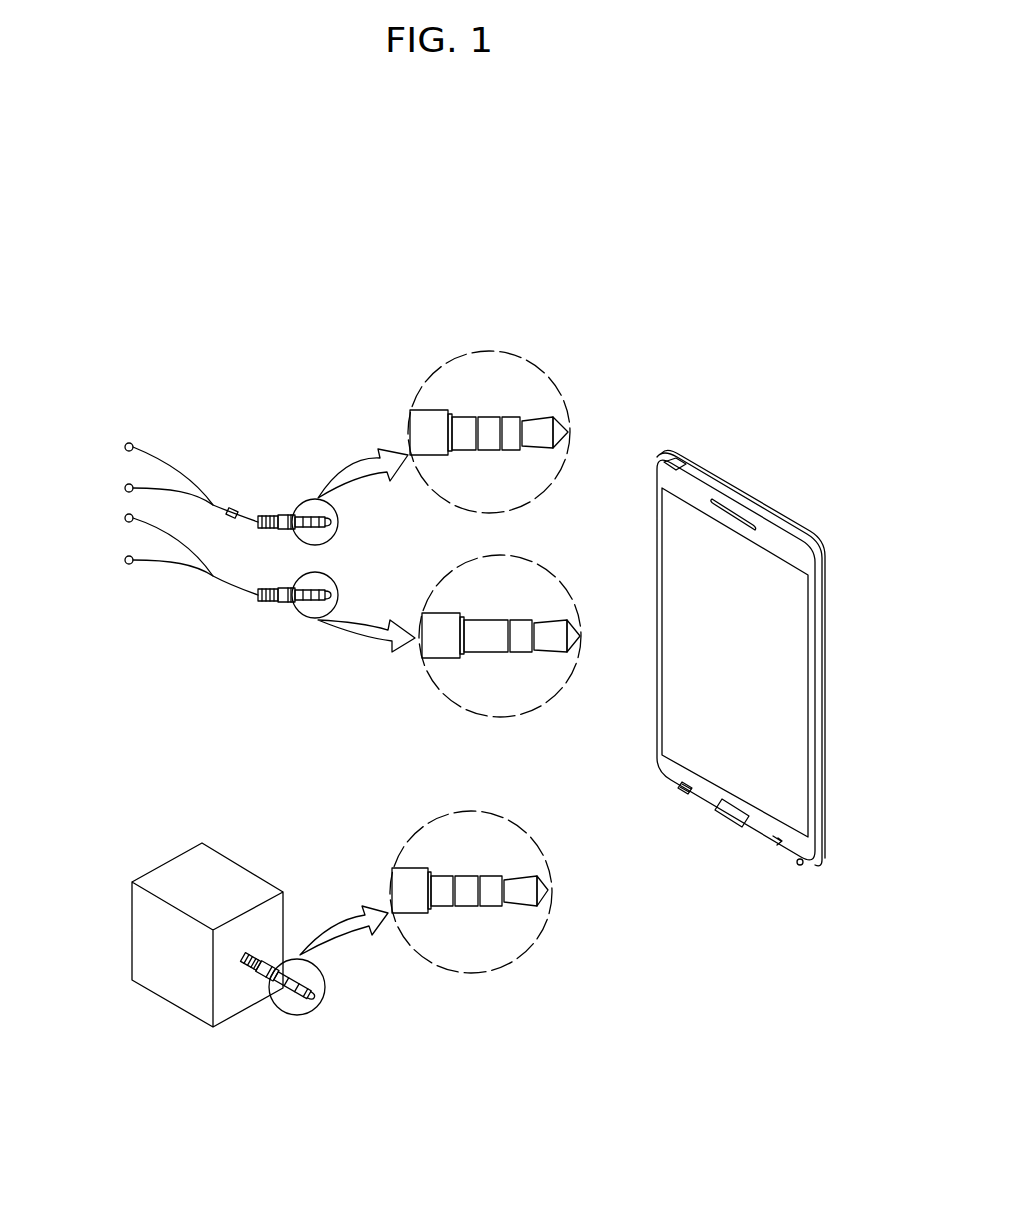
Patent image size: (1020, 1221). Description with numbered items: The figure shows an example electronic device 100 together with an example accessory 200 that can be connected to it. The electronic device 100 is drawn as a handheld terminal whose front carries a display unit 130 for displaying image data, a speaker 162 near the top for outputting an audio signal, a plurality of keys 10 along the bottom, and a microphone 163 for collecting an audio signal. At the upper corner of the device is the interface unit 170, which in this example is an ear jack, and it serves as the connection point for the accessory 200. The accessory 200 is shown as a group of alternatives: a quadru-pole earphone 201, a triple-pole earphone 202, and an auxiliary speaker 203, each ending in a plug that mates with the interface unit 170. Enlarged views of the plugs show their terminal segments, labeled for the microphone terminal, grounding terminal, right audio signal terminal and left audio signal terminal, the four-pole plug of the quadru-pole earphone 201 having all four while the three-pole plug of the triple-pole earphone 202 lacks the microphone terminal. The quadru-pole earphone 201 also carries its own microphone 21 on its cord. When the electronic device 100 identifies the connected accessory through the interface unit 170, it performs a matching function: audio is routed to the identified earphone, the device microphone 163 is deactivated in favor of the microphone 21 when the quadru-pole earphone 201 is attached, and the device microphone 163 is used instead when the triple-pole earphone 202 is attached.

The electronic device 100 is at (750, 468).
The display unit 130 is at (792, 682).
The speaker 162 is at (751, 513).
The microphone 163 is at (800, 868).
The interface unit 170 is at (687, 462).
The keys 10 is at (672, 790).
The accessory 200 is at (94, 1043).
The quadru-pole earphone 201 is at (213, 476).
The triple-pole earphone 202 is at (204, 592).
The auxiliary speaker 203 is at (236, 841).
The microphone 21 is at (237, 512).